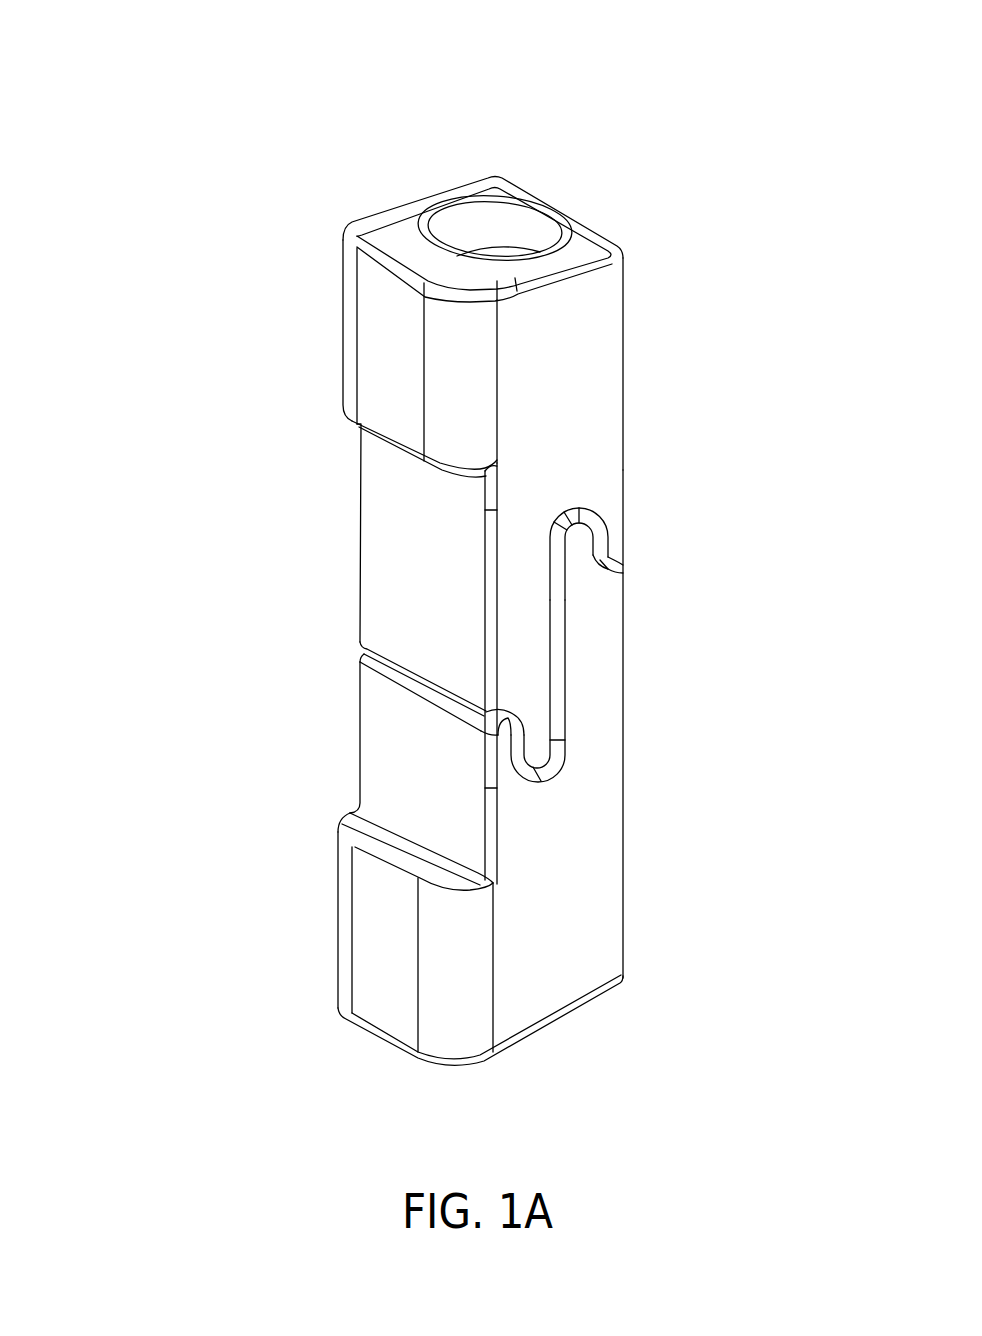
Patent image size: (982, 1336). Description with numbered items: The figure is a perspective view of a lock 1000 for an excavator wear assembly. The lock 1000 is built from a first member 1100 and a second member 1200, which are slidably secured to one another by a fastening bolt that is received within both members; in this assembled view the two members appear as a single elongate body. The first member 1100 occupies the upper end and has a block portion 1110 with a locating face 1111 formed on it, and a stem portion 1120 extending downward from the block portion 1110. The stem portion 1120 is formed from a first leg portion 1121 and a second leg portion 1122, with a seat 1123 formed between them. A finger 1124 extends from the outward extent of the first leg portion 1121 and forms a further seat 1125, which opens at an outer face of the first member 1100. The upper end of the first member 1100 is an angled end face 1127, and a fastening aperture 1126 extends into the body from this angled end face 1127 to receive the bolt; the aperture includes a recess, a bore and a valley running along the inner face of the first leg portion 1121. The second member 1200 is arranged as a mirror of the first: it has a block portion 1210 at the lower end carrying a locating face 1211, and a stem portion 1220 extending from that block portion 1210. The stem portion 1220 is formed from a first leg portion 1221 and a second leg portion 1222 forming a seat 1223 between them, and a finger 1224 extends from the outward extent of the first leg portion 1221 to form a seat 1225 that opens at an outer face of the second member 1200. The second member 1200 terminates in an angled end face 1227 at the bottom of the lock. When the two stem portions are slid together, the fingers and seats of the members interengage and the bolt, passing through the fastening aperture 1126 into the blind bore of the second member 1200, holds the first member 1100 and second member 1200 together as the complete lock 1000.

The lock 1000 is at (213, 190).
The first member 1100 is at (630, 407).
The block portion 1110 is at (385, 337).
The locating face 1111 is at (460, 472).
The stem portion 1120 is at (587, 353).
The first leg portion 1121 is at (523, 548).
The second leg portion 1122 is at (610, 537).
The seat 1123 is at (582, 512).
The finger 1124 is at (497, 770).
The seat 1125 is at (472, 724).
The fastening aperture 1126 is at (523, 227).
The angled end face 1127 is at (390, 230).
The second member 1200 is at (635, 825).
The block portion 1210 is at (380, 927).
The locating face 1211 is at (385, 845).
The stem portion 1220 is at (577, 865).
The first leg portion 1221 is at (590, 633).
The second leg portion 1222 is at (480, 748).
The seat 1223 is at (557, 770).
The finger 1224 is at (578, 563).
The seat 1225 is at (622, 567).
The angled end face 1227 is at (583, 1007).